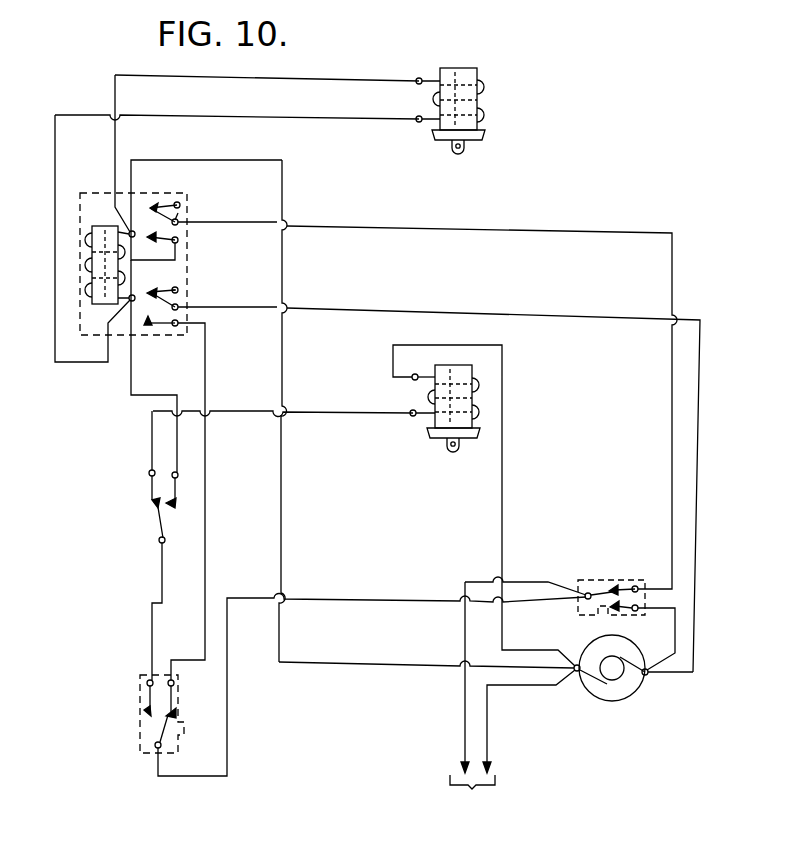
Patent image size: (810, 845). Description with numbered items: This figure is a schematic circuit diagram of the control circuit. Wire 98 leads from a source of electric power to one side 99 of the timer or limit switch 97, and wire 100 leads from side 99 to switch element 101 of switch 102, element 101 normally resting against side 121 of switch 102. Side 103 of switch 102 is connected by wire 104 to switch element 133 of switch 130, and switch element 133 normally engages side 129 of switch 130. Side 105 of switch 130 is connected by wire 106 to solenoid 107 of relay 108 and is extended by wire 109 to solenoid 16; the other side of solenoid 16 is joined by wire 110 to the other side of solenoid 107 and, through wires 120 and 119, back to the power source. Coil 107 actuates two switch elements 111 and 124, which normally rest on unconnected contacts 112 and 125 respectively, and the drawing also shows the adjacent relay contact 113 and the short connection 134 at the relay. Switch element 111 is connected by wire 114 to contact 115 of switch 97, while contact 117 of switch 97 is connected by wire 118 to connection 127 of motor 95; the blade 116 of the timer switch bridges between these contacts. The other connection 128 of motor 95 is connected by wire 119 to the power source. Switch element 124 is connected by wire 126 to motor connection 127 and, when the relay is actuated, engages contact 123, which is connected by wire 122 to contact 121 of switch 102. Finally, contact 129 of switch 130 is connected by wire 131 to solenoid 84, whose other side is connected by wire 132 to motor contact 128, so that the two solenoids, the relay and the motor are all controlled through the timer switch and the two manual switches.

The solenoid 16 is at (478, 101).
The solenoid 84 is at (474, 393).
The motor 95 is at (633, 690).
The timer or limit switch 97 is at (578, 582).
The wire 98 is at (463, 735).
The side of timer switch 99 is at (585, 598).
The wire 100 is at (367, 597).
The switch element 101 is at (161, 745).
The switch 102 is at (140, 750).
The side of switch 103 is at (146, 713).
The wire 104 is at (150, 605).
The side of switch 105 is at (170, 508).
The wire 106 is at (145, 395).
The solenoid of relay 107 is at (88, 265).
The relay 108 is at (80, 312).
The wire 109 is at (242, 116).
The wire 110 is at (200, 76).
The switch element 111 is at (180, 212).
The contact 112 is at (151, 207).
The relay contact 113 is at (153, 235).
The wire 114 is at (430, 227).
The contact of timer switch 115 is at (613, 588).
The timer switch blade 116 is at (598, 603).
The contact of timer switch 117 is at (613, 611).
The wire 118 is at (675, 628).
The wire 119 is at (489, 742).
The wire 120 is at (320, 666).
The side of switch 121 is at (170, 716).
The wire 122 is at (204, 546).
The contact 123 is at (148, 326).
The switch element 124 is at (178, 293).
The contact 125 is at (152, 293).
The wire 126 is at (333, 310).
The motor connection 127 is at (648, 675).
The motor connection 128 is at (576, 673).
The side of switch 129 is at (150, 505).
The switch 130 is at (148, 472).
The wire 131 is at (294, 410).
The wire 132 is at (504, 480).
The switch element 133 is at (158, 527).
The conductor 134 is at (177, 254).